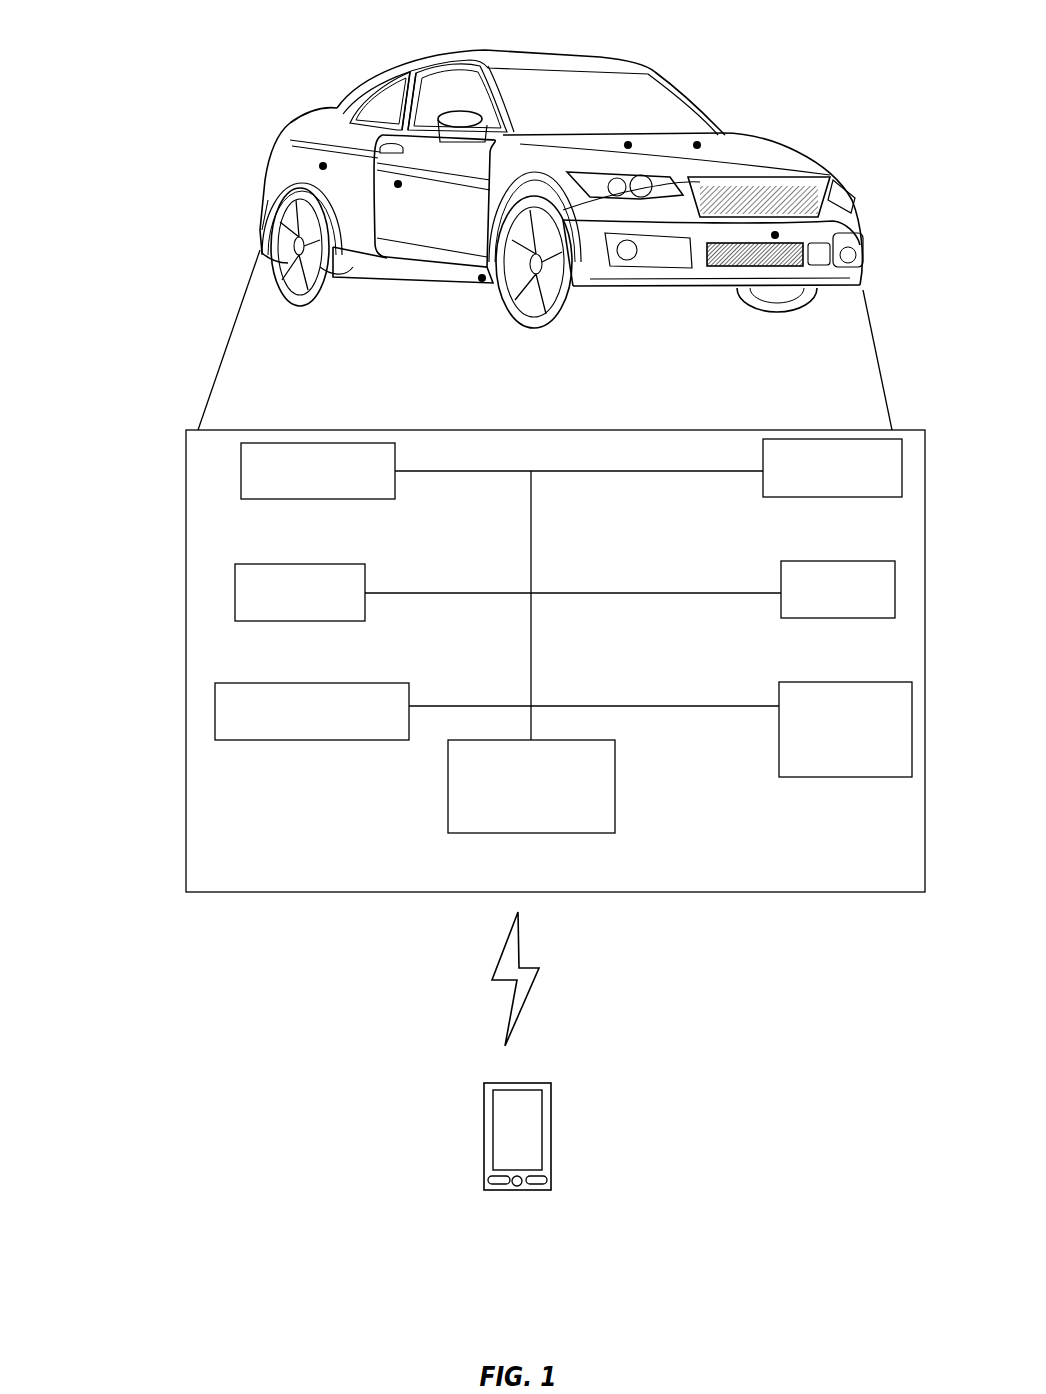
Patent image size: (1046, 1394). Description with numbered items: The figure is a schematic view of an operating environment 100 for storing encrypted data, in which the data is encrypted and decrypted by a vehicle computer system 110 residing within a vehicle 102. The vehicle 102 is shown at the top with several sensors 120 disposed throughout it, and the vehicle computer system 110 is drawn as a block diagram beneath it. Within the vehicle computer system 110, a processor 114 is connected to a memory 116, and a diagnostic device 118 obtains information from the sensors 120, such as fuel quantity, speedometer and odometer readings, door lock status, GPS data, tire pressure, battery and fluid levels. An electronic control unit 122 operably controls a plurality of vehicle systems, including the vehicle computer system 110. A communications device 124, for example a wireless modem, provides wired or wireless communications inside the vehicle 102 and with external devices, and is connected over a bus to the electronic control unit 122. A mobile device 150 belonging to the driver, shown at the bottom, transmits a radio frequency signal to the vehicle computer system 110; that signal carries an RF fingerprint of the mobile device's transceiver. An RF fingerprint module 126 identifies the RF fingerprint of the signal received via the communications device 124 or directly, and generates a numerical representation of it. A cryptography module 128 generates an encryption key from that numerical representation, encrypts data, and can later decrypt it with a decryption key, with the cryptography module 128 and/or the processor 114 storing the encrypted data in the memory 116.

The operating environment 100 is at (131, 55).
The vehicle 102 is at (335, 103).
The vehicle computer system 110 is at (350, 416).
The processor 114 is at (318, 501).
The memory 116 is at (833, 499).
The diagnostic device 118 is at (316, 623).
The sensors 120 is at (323, 166).
The electronic control unit 122 is at (845, 621).
The communications device 124 is at (313, 743).
The RF fingerprint module 126 is at (843, 786).
The cryptography module 128 is at (537, 843).
The mobile device 150 is at (483, 1105).